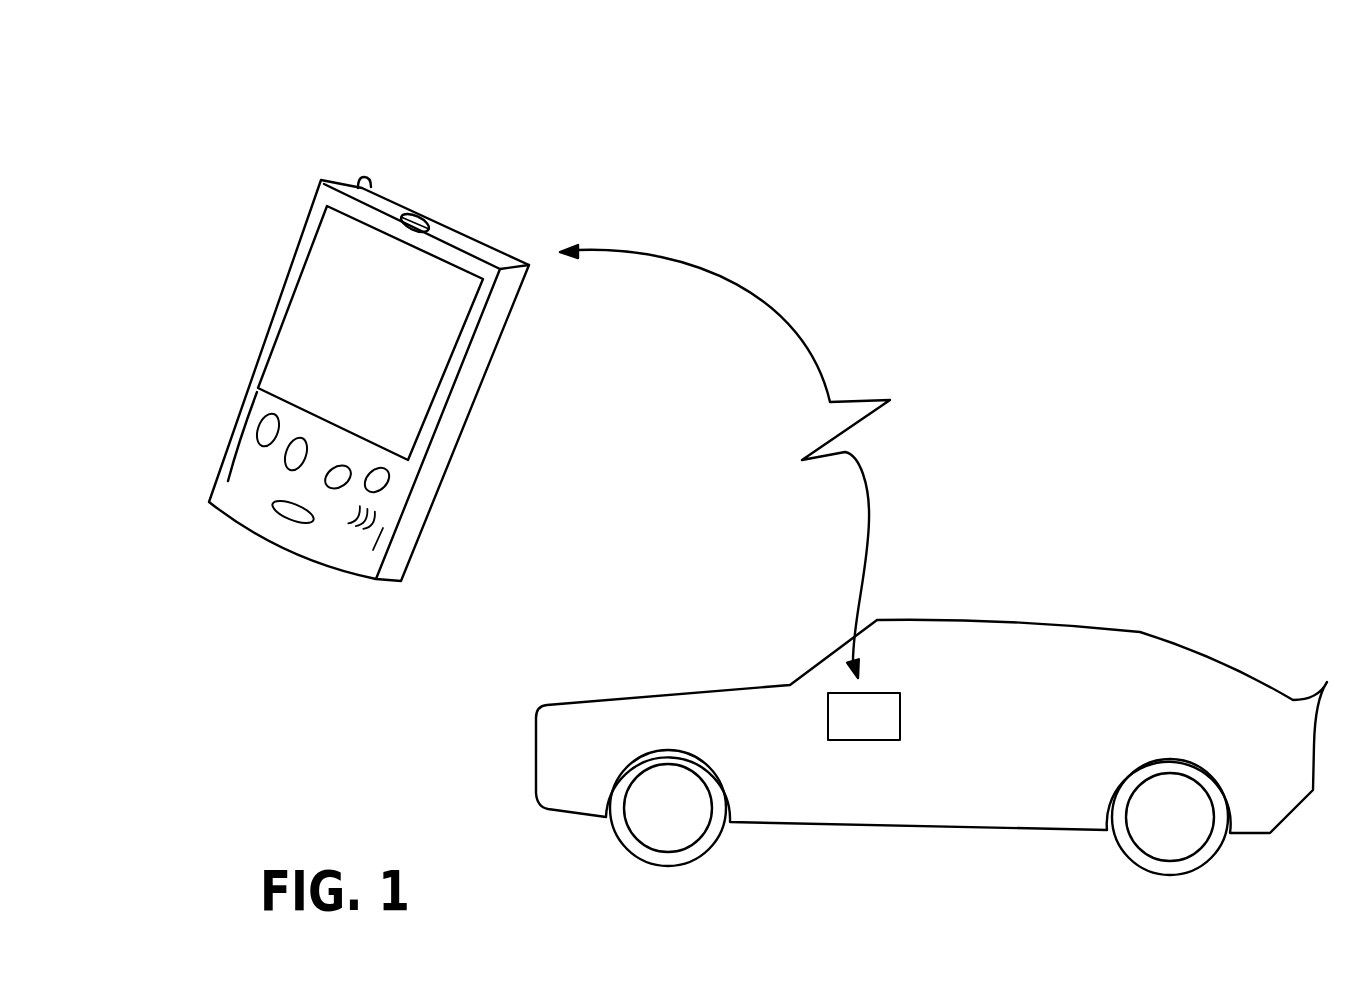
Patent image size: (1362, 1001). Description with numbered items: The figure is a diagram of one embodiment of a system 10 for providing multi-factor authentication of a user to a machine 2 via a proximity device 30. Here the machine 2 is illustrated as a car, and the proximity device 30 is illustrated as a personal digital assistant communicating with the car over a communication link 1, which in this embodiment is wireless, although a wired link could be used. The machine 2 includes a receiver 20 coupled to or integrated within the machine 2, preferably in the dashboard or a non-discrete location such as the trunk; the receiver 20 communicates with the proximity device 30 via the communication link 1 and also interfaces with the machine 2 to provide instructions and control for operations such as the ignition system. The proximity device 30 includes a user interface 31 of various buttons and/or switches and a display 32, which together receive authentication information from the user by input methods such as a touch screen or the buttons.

The system 10 is at (1020, 90).
The communication link 1 is at (748, 285).
The machine 2 is at (1000, 620).
The receiver 20 is at (864, 716).
The proximity device 30 is at (483, 373).
The user interface 31 is at (275, 488).
The display 32 is at (296, 338).